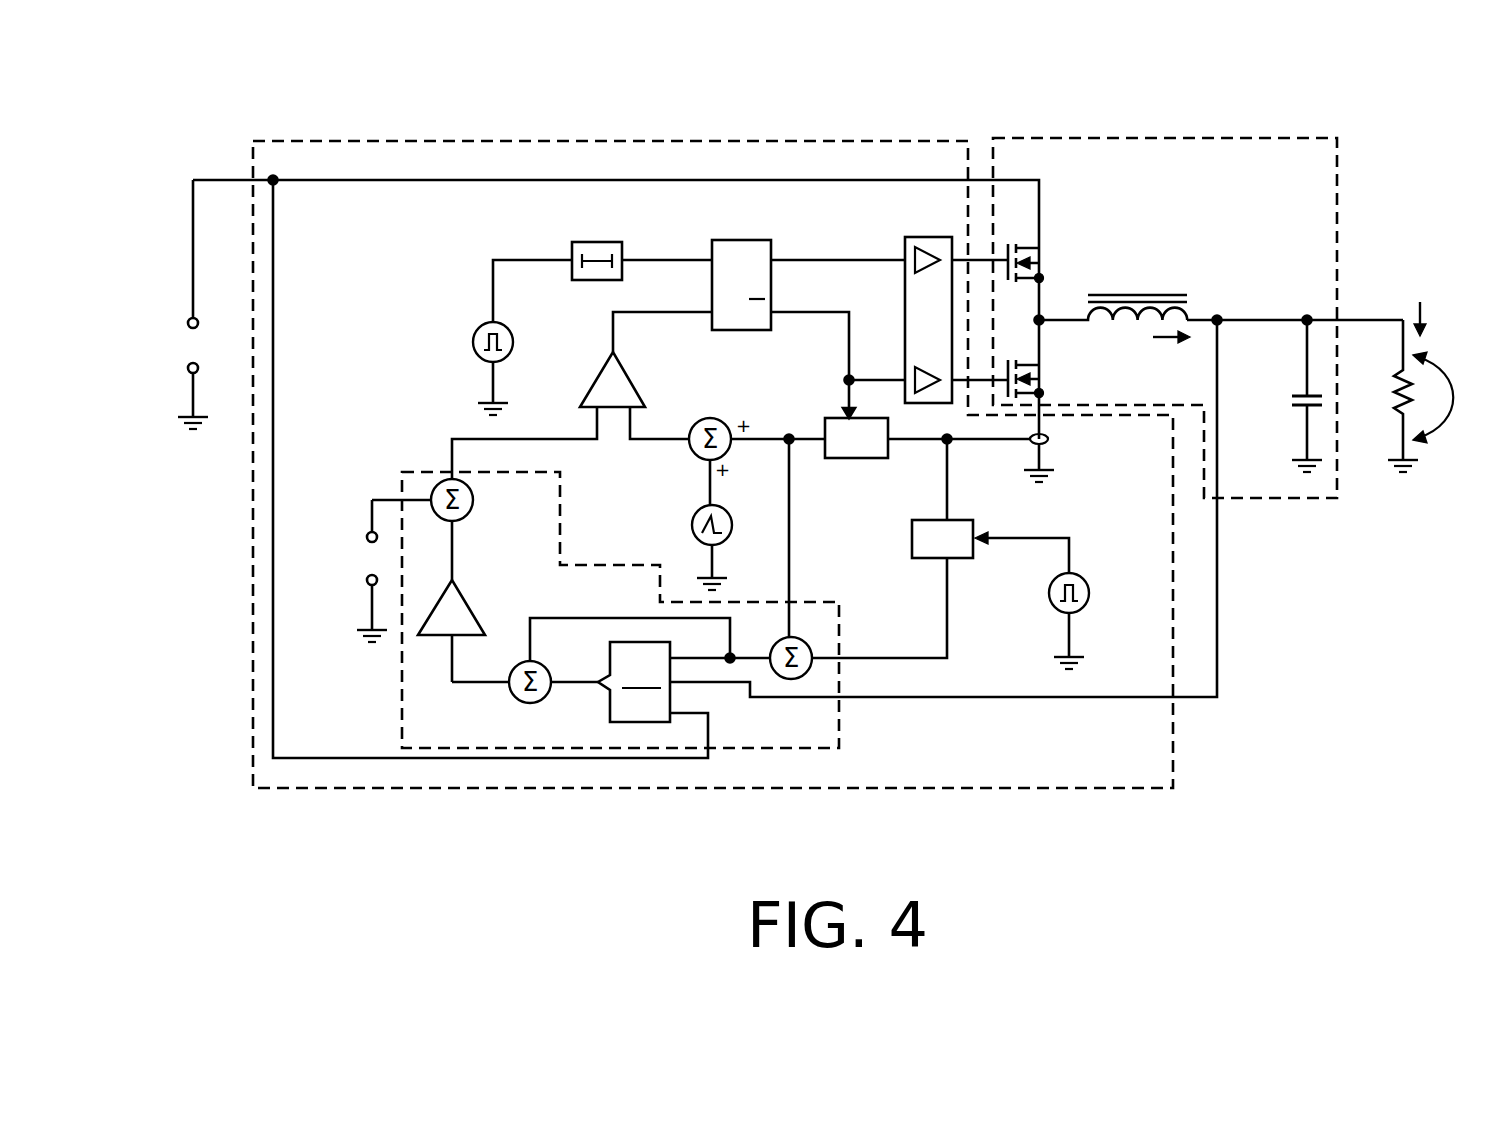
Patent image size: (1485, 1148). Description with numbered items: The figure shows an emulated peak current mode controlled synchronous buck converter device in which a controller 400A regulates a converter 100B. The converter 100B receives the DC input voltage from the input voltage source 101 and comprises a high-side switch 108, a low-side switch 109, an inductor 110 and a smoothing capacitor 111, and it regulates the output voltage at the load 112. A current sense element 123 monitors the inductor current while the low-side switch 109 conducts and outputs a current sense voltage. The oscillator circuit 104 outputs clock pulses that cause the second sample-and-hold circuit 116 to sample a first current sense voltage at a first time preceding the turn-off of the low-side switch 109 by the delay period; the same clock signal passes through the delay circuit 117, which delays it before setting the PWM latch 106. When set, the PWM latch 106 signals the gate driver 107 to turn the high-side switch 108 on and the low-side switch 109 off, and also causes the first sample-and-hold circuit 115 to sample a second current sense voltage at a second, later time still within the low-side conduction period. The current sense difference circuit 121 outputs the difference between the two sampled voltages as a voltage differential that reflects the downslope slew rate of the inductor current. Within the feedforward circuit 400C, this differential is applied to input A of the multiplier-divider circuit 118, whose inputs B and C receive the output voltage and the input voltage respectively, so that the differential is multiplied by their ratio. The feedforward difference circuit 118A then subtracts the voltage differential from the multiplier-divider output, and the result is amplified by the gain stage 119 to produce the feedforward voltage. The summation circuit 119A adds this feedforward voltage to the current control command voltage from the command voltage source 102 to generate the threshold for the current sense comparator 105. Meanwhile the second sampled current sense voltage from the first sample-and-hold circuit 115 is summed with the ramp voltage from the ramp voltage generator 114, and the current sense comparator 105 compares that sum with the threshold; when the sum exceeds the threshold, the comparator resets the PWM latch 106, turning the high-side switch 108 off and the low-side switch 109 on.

The input voltage source 101 is at (188, 322).
The current control command voltage source 102 is at (366, 535).
The oscillator circuit 104 is at (478, 355).
The current sense comparator 105 is at (630, 385).
The PWM latch 106 is at (742, 332).
The gate driver 107 is at (900, 250).
The high-side switch 108 is at (1045, 262).
The low-side switch 109 is at (1045, 380).
The inductor 110 is at (1175, 295).
The smoothing capacitor 111 is at (1292, 400).
The load 112 is at (1395, 388).
The ramp voltage generator 114 is at (695, 530).
The first sample-and-hold circuit 115 is at (852, 459).
The second sample-and-hold circuit 116 is at (930, 559).
The delay circuit 117 is at (572, 252).
The multiplier-divider circuit 118 is at (605, 705).
The feedforward difference circuit 118A is at (512, 698).
The gain stage 119 is at (468, 608).
The summation circuit 119A is at (473, 492).
The current sense difference circuit 121 is at (800, 638).
The current sense element 123 is at (1050, 444).
The controller 400A is at (298, 141).
The feedforward circuit 400C is at (840, 712).
The converter 100B is at (1040, 138).